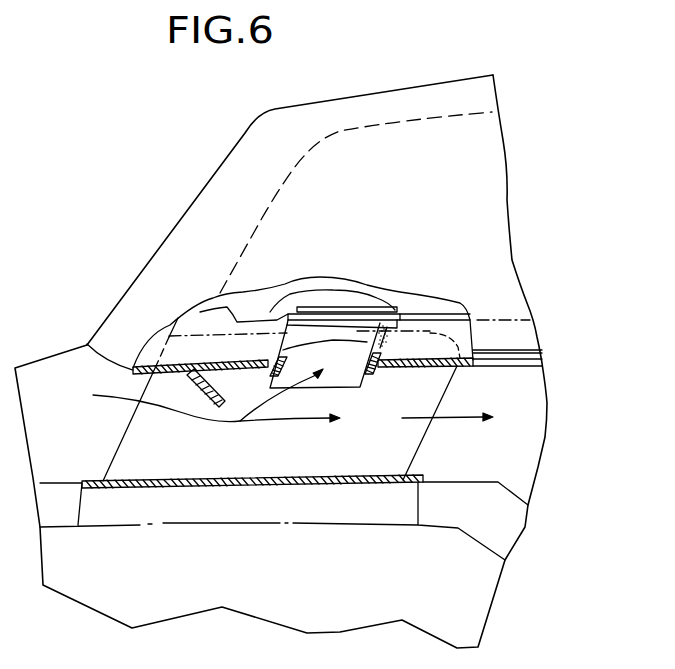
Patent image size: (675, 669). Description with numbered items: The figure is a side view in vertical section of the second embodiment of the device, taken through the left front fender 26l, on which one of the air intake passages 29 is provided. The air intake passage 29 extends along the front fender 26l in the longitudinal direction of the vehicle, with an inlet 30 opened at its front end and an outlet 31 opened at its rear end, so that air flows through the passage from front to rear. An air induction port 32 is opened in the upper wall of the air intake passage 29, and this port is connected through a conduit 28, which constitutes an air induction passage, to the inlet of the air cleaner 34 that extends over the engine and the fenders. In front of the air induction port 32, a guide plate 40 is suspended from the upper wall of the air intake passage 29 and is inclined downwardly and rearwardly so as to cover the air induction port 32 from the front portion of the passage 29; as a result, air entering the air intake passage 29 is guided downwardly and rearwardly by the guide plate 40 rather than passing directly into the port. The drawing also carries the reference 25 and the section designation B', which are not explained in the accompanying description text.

The door body 25 is at (42, 367).
The air cleaner 34 is at (296, 182).
The section line B' is at (524, 139).
The conduit 28 is at (382, 340).
The guide plate 40 is at (197, 386).
The air induction port 32 is at (347, 388).
The outlet 31 is at (443, 392).
The inlet 30 is at (123, 452).
The air intake passage 29 is at (290, 463).
The left front fender 26l is at (218, 486).